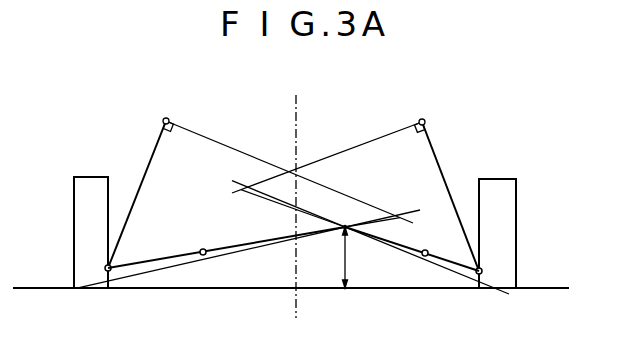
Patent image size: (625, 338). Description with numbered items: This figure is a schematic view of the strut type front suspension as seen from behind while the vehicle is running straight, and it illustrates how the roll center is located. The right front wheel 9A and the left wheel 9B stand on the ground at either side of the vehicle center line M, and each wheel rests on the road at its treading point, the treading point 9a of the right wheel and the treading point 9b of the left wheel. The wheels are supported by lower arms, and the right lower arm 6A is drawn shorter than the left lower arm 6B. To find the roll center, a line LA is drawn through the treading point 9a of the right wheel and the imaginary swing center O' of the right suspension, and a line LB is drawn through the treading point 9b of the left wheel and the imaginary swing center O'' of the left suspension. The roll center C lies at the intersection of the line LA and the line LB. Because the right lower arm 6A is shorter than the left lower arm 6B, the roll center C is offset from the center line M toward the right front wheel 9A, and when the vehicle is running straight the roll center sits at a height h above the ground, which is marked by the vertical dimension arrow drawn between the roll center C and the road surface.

The right front wheel 9A is at (504, 179).
The left wheel 9B is at (91, 177).
The treading point of the right wheel 9a is at (487, 292).
The treading point of the left wheel 9b is at (90, 291).
The right lower arm 6A is at (455, 264).
The left lower arm 6B is at (168, 263).
The line passing through the treading point of the right wheel and the imaginary swi LA is at (402, 252).
The line passing through the treading point of the left wheel and the imaginary swin LB is at (237, 255).
The roll center C is at (343, 230).
The height of the roll center h is at (354, 257).
The center line M is at (295, 192).
The imaginary swing center of the right suspension O' is at (242, 175).
The imaginary swing center of the left suspension O'' is at (397, 202).